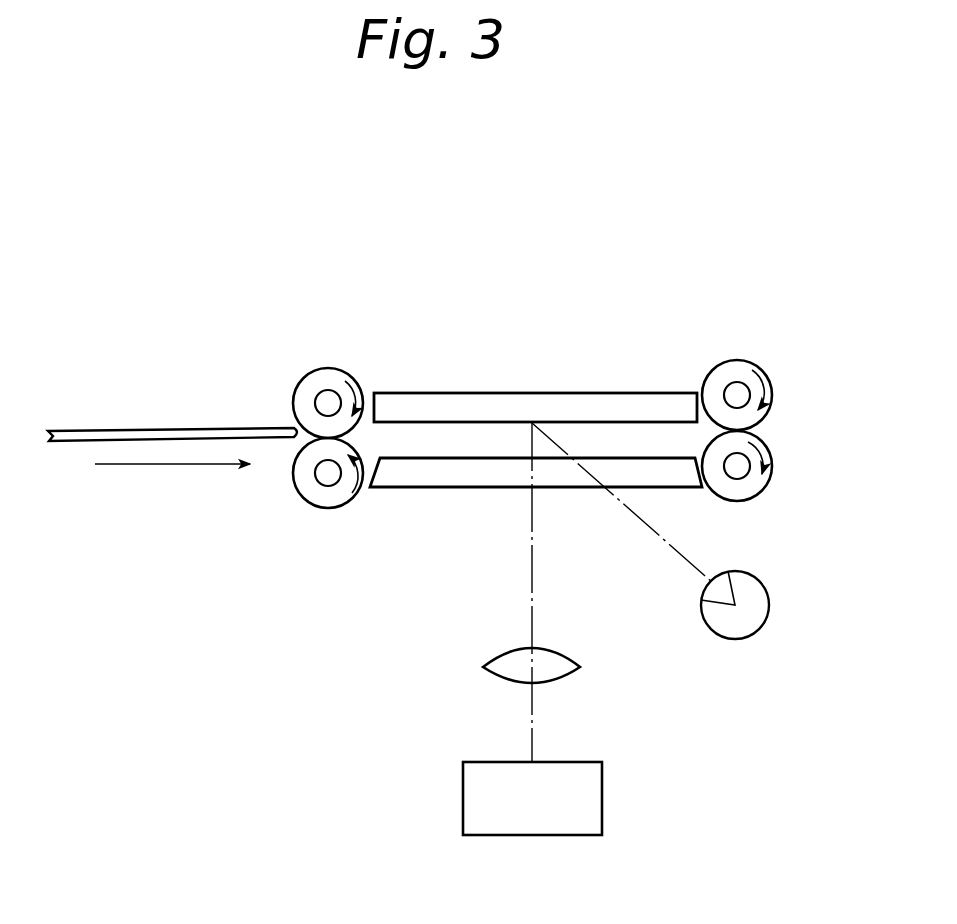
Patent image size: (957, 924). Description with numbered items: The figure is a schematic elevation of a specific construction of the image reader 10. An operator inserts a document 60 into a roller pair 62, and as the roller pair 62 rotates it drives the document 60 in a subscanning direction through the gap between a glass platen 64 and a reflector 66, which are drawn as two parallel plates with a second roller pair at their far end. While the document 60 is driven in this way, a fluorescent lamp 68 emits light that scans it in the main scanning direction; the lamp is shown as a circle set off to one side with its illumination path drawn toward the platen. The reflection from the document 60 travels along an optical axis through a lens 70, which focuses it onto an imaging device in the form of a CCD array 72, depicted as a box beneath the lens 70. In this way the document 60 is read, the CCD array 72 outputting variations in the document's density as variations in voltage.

The image reader 10 is at (598, 300).
The document 60 is at (116, 430).
The roller pair 62 is at (321, 364).
The glass platen 64 is at (448, 487).
The reflector 66 is at (466, 393).
The fluorescent lamp 68 is at (727, 640).
The lens 70 is at (485, 662).
The CCD array 72 is at (486, 762).